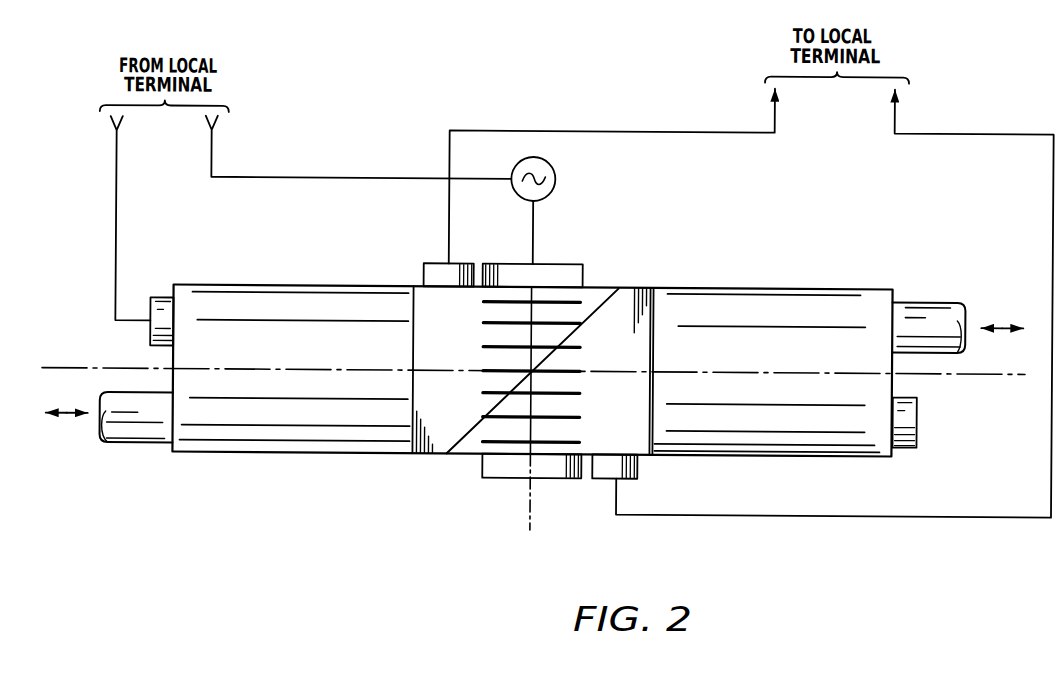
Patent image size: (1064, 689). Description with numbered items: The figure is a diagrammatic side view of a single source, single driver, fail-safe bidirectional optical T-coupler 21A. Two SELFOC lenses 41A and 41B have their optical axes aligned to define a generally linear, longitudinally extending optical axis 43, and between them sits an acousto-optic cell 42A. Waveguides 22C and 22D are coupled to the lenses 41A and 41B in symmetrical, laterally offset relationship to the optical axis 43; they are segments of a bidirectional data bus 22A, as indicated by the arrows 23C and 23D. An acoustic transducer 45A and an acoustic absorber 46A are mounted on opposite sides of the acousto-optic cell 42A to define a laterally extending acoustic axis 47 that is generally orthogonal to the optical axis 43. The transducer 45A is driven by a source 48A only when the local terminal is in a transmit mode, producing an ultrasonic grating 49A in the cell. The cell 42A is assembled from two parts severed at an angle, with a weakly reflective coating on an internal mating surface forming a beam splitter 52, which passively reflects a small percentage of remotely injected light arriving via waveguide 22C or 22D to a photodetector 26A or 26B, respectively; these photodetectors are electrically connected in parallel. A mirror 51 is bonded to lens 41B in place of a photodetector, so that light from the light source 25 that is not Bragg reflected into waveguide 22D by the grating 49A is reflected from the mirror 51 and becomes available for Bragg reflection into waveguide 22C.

The bidirectional coupler 21A is at (294, 462).
The bidirectional data bus 22A is at (127, 448).
The waveguide 22C is at (162, 428).
The waveguide 22D is at (953, 344).
The arrow 23C is at (67, 419).
The arrow 23D is at (1005, 324).
The light source 25 is at (157, 300).
The photodetector 26A is at (422, 268).
The photodetector 26B is at (640, 466).
The lens 41A is at (245, 304).
The lens 41B is at (797, 300).
The acousto-optic cell 42A is at (620, 302).
The optical axis 43 is at (63, 367).
The acoustic transducer 45A is at (560, 264).
The acoustic absorber 46A is at (502, 470).
The acoustic axis 47 is at (532, 517).
The source 48A is at (554, 179).
The ultrasonic grating 49A is at (574, 394).
The mirror 51 is at (917, 419).
The beam splitter 52 is at (452, 442).